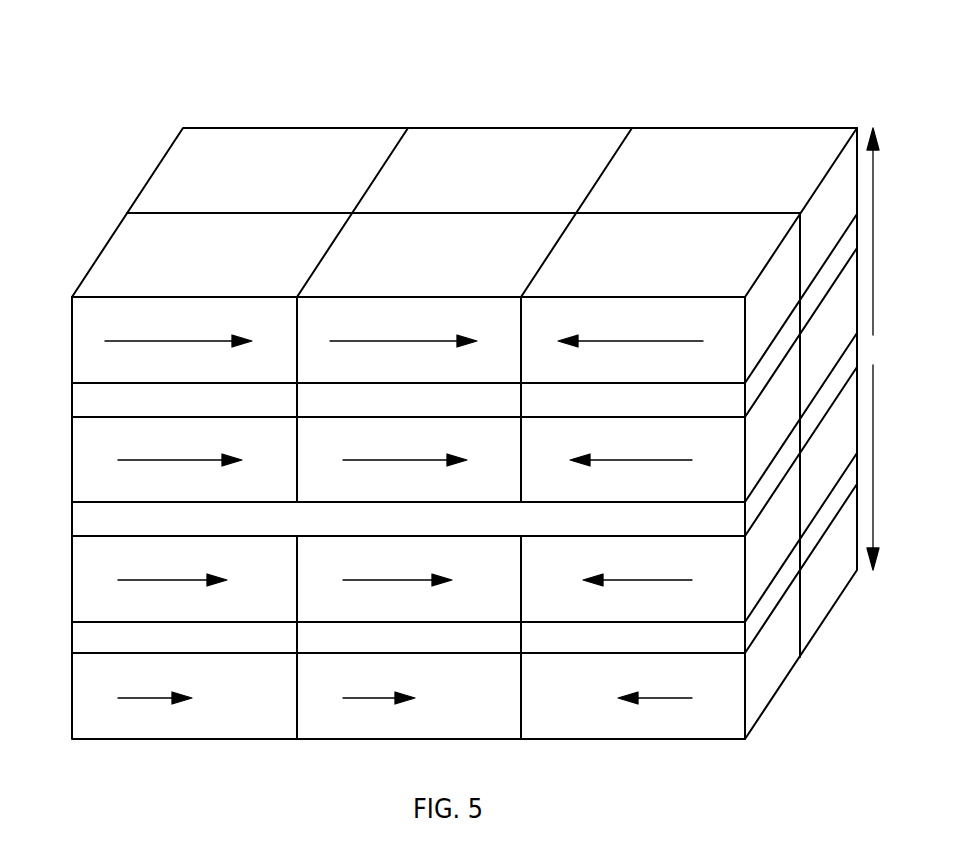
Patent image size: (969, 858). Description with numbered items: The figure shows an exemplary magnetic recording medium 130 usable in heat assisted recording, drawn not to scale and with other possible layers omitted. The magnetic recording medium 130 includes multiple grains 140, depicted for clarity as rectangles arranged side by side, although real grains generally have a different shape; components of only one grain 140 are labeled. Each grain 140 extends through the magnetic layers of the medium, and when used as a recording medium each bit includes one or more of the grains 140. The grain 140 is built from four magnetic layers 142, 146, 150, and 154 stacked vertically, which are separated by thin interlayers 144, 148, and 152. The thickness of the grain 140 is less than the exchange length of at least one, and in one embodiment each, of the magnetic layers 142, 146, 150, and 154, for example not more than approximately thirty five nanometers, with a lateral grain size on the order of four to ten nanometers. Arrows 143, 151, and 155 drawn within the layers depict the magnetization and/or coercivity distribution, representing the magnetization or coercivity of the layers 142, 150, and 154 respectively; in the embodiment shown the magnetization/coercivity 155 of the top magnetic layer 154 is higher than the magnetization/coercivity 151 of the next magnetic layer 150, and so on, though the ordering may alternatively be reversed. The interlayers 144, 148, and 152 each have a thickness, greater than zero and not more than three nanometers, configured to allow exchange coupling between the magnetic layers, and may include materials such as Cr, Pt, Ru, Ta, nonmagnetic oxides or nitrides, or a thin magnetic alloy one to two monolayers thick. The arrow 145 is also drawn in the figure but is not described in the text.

The magnetic recording medium 130 is at (470, 40).
The grain 140 is at (708, 106).
The magnetic layer 142 is at (72, 677).
The arrow 143 is at (166, 700).
The interlayer 144 is at (72, 638).
The polarization direction arrow 145 is at (195, 582).
The magnetic layer 146 is at (72, 588).
The interlayer 148 is at (72, 520).
The magnetic layer 150 is at (72, 452).
The arrow 151 is at (152, 460).
The interlayer 152 is at (72, 392).
The top magnetic layer 154 is at (72, 340).
The arrow 155 is at (157, 341).